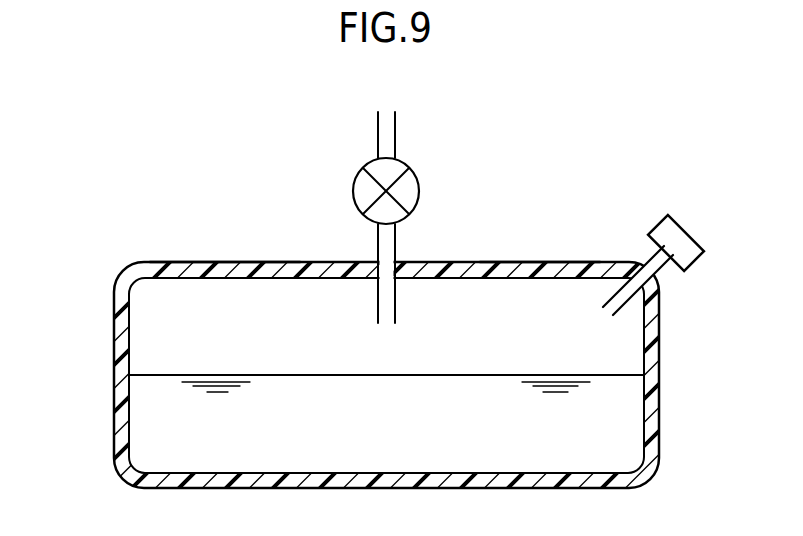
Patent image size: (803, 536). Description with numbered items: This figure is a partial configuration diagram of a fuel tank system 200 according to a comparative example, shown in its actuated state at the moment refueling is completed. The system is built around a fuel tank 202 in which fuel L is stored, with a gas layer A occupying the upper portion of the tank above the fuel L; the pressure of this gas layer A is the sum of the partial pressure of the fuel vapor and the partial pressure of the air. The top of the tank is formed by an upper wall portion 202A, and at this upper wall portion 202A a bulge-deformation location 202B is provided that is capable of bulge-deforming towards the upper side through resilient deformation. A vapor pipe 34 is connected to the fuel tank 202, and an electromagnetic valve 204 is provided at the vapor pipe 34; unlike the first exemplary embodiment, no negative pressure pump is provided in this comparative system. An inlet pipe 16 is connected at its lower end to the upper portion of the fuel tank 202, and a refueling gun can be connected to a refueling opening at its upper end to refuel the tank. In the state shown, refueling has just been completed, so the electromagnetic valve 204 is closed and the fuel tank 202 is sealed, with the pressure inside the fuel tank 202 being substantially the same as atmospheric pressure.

The fuel tank system 200 is at (686, 137).
The fuel tank 202 is at (111, 379).
The upper wall portion 202A is at (185, 266).
The bulge-deformation location 202B is at (520, 265).
The electromagnetic valve 204 is at (413, 171).
The vapor pipe 34 is at (377, 243).
The inlet pipe 16 is at (668, 268).
The gas layer A is at (157, 343).
The fuel L is at (620, 415).